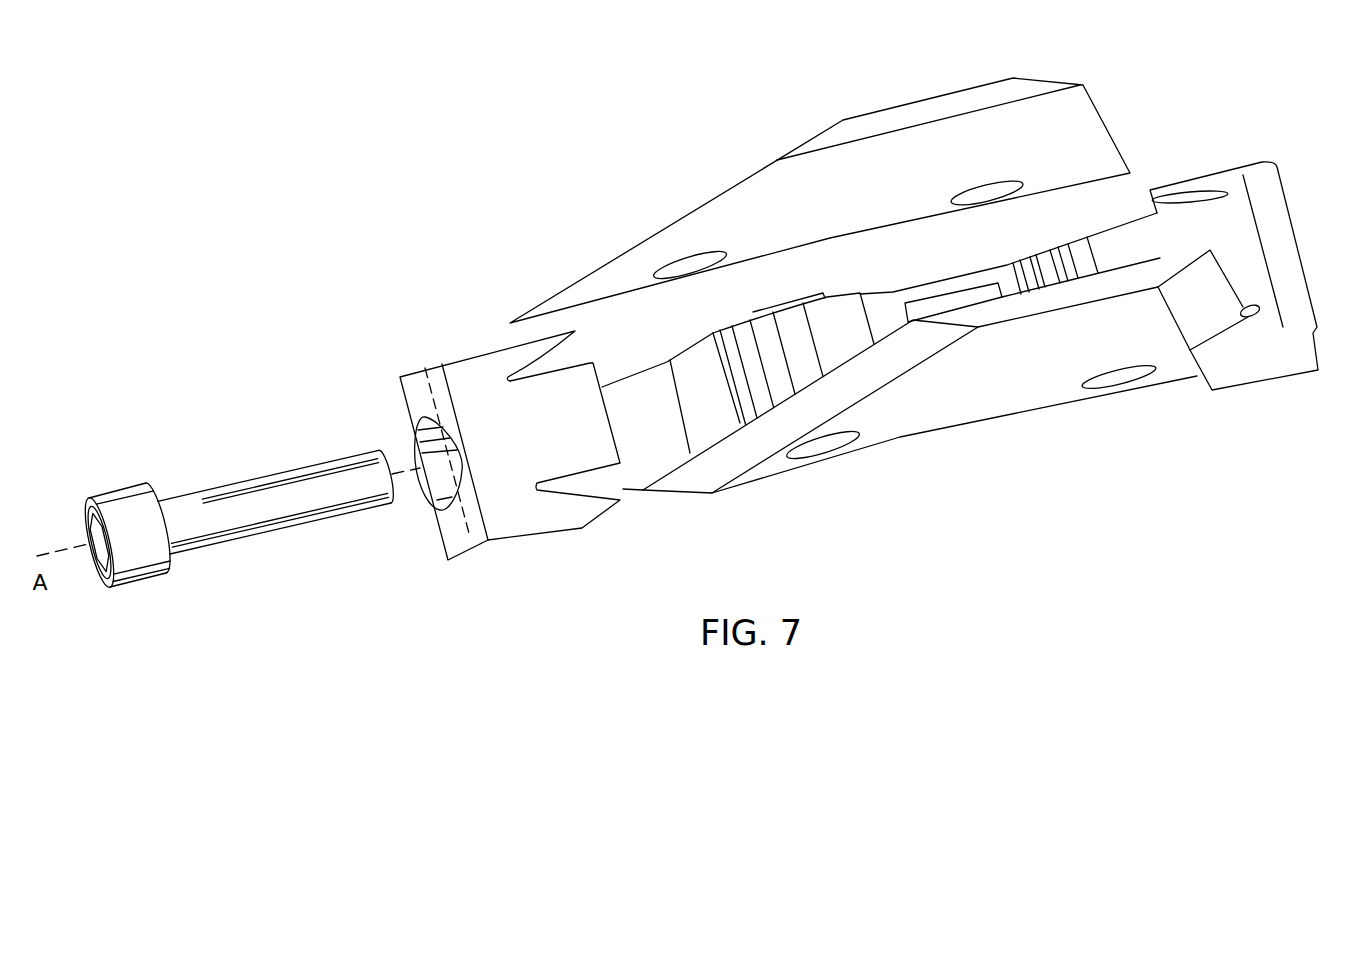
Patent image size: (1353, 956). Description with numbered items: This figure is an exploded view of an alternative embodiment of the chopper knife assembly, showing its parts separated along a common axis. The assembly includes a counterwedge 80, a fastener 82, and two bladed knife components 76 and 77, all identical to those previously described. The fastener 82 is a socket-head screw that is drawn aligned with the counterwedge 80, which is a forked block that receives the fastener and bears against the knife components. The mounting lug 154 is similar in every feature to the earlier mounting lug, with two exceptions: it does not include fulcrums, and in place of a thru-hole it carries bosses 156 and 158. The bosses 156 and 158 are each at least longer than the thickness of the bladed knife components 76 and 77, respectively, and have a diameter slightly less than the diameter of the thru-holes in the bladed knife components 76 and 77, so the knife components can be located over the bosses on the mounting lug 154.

The bladed knife component 76 is at (777, 160).
The bladed knife component 77 is at (978, 407).
The counterwedge 80 is at (458, 356).
The fastener 82 is at (238, 477).
The mounting lug 154 is at (1273, 183).
The boss 156 is at (757, 313).
The boss 158 is at (830, 447).